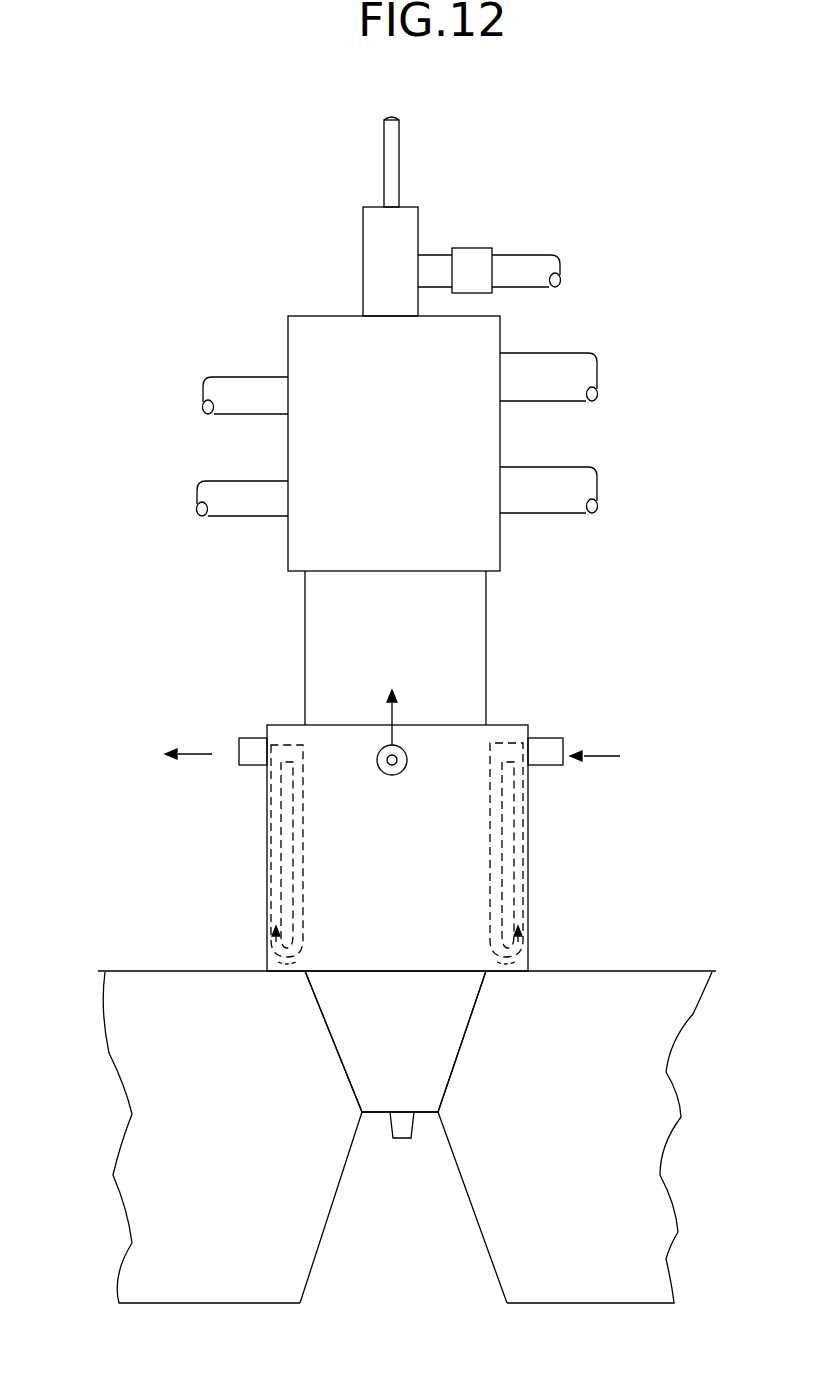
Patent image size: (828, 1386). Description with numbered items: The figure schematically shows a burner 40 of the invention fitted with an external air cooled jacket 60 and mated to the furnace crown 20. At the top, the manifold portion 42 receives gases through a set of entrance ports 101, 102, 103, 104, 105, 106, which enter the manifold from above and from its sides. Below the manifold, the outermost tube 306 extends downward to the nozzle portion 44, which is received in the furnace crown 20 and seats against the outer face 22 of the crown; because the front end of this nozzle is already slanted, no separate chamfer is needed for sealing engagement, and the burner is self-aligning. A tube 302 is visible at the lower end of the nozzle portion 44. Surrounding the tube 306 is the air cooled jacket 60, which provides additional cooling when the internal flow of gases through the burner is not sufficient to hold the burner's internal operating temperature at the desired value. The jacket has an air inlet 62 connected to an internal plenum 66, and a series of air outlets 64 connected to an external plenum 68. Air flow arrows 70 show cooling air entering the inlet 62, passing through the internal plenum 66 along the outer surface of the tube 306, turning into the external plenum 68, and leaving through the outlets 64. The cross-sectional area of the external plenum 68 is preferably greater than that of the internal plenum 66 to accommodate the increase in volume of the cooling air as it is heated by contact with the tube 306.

The entrance port 101 is at (404, 105).
The entrance port 102 is at (530, 268).
The manifold portion 42 is at (473, 345).
The entrance port 103 is at (553, 385).
The entrance port 104 is at (250, 396).
The entrance port 105 is at (555, 497).
The entrance port 106 is at (240, 497).
The tube 306 is at (488, 651).
The burner 40 is at (258, 594).
The air cooled jacket 60 is at (404, 915).
The air inlet 62 is at (552, 748).
The air outlet 64 is at (255, 755).
The internal plenum 66 is at (494, 796).
The external plenum 68 is at (520, 848).
The air flow arrow 70 is at (195, 753).
The outer face of furnace crown 22 is at (650, 968).
The furnace crown 20 is at (580, 1158).
The nozzle portion 44 is at (452, 1008).
The tube 302 is at (414, 1127).